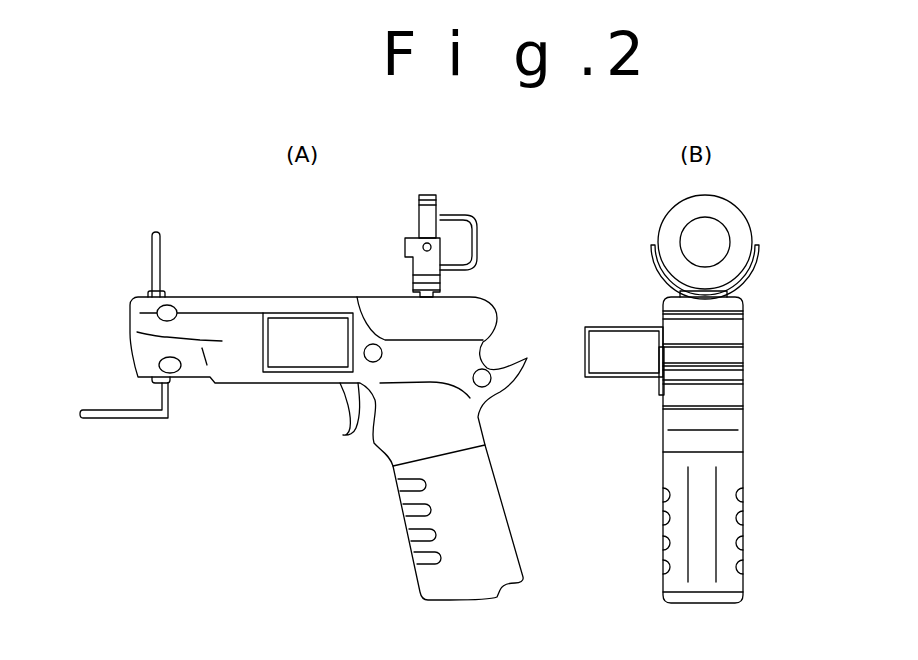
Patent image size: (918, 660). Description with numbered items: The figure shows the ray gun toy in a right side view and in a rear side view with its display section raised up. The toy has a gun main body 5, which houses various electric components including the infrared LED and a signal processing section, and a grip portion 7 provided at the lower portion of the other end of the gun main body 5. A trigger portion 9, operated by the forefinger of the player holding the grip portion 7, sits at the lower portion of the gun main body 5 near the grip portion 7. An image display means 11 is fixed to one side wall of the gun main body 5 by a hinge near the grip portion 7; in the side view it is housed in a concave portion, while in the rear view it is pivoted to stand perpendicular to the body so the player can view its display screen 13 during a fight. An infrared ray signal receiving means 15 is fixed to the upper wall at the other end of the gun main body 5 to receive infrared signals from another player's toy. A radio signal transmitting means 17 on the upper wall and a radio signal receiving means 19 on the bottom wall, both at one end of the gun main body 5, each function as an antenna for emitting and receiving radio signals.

The gun main body 5 is at (282, 296).
The grip portion 7 is at (433, 583).
The trigger portion 9 is at (345, 438).
The image display means 11 is at (597, 382).
The display screen 13 is at (290, 352).
The infrared ray signal receiving means 15 is at (419, 215).
The radio signal transmitting means 17 is at (162, 240).
The radio signal receiving means 19 is at (127, 422).